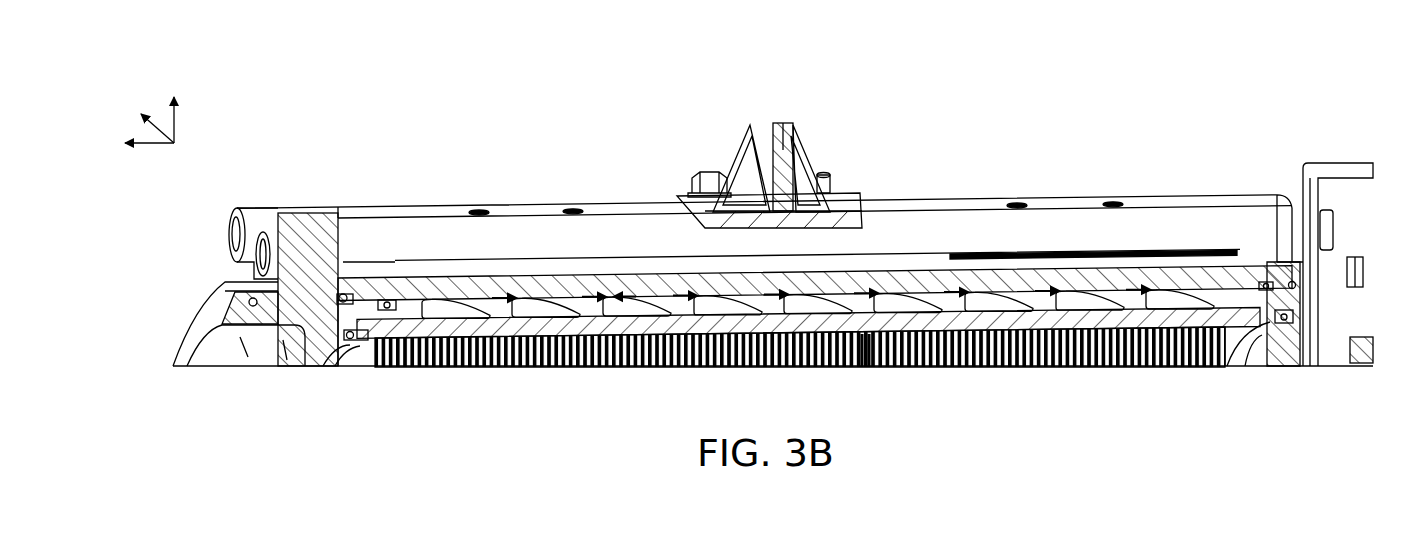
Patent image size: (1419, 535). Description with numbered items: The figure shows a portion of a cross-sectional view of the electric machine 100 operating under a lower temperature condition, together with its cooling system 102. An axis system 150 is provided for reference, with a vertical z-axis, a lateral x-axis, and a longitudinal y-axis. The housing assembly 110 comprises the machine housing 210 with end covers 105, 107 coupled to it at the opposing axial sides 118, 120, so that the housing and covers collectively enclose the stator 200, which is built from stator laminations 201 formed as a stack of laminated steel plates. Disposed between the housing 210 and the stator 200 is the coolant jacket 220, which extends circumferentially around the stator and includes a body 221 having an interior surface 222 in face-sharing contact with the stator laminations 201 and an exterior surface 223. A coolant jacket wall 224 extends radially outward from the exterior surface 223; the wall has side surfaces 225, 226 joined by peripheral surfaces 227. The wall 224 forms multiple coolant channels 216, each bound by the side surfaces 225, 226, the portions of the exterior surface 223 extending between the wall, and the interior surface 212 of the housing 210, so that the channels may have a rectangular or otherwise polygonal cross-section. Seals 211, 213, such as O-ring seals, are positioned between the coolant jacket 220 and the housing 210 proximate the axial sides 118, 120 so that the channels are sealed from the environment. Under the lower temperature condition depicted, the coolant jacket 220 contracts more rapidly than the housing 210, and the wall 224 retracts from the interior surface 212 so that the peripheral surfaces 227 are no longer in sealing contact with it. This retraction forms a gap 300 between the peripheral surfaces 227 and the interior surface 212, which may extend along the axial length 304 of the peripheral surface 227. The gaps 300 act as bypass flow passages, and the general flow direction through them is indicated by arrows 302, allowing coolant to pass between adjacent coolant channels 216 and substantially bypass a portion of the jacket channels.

The electric machine 100 is at (1326, 75).
The cooling system 102 is at (1307, 127).
The end cover 105 is at (292, 363).
The end cover 107 is at (1310, 340).
The housing assembly 110 is at (287, 176).
The axial side 118 is at (205, 253).
The axial side 120 is at (1357, 230).
The axis system 150 is at (105, 89).
The stator 200 is at (937, 346).
The stator laminations 201 is at (868, 340).
The machine housing 210 is at (407, 290).
The seal 211 is at (367, 340).
The interior surface of the housing 212 is at (481, 325).
The seal 213 is at (1296, 287).
The coolant channels 216 is at (1006, 294).
The coolant jacket 220 is at (1243, 300).
The coolant jacket body 221 is at (1205, 318).
The interior surface 222 is at (1085, 332).
The exterior surface 223 is at (1077, 300).
The coolant jacket wall 224 is at (437, 290).
The side surface 225 is at (1192, 256).
The side surface 226 is at (1117, 300).
The peripheral surface 227 is at (503, 305).
The gap 300 is at (497, 296).
The arrows 302 is at (673, 300).
The axial length 304 is at (574, 296).